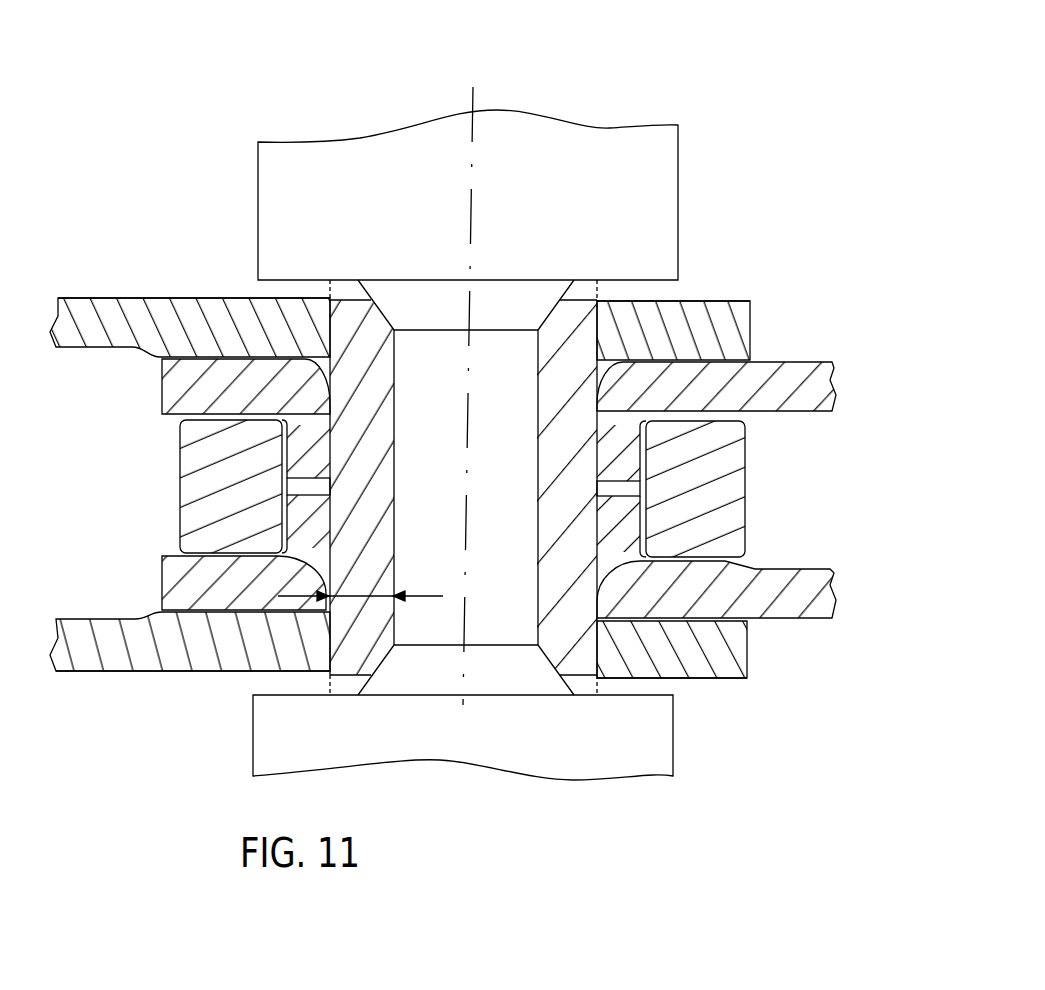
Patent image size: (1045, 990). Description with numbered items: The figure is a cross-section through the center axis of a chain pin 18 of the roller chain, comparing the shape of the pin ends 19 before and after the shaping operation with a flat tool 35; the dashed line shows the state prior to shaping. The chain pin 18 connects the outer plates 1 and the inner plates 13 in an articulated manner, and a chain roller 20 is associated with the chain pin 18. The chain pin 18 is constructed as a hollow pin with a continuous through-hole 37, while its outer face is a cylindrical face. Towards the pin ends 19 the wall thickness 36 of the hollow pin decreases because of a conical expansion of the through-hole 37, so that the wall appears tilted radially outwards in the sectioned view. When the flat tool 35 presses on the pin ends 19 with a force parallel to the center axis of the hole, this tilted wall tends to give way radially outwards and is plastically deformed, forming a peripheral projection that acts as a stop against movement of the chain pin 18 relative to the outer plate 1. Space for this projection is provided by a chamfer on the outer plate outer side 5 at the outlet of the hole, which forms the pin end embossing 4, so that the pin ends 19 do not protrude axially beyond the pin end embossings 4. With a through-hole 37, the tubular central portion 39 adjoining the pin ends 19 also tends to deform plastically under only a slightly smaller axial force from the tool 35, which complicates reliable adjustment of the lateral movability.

The outer plate 1 is at (728, 327).
The pin end embossing 4 is at (328, 306).
The outer plate outer side 5 is at (157, 298).
The inner plate 13 is at (822, 395).
The chain pin 18 is at (593, 445).
The pin end 19 is at (451, 366).
The chain roller 20 is at (726, 495).
The flat tool 35 is at (647, 168).
The wall thickness 36 is at (428, 595).
The through-hole 37 is at (488, 355).
The central portion 39 is at (578, 397).